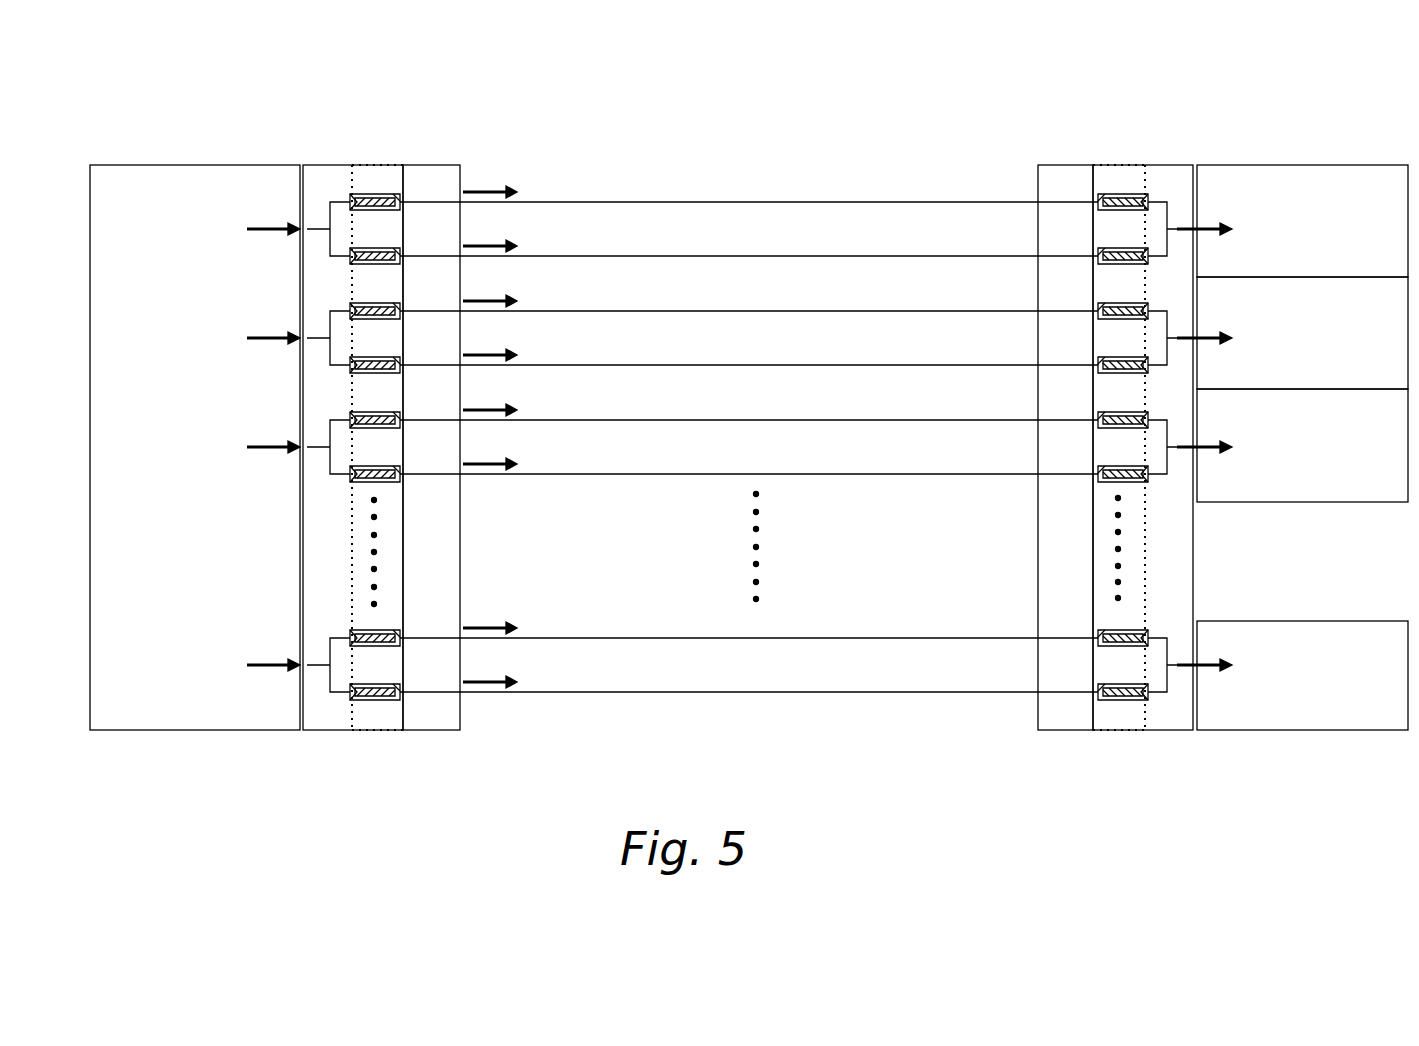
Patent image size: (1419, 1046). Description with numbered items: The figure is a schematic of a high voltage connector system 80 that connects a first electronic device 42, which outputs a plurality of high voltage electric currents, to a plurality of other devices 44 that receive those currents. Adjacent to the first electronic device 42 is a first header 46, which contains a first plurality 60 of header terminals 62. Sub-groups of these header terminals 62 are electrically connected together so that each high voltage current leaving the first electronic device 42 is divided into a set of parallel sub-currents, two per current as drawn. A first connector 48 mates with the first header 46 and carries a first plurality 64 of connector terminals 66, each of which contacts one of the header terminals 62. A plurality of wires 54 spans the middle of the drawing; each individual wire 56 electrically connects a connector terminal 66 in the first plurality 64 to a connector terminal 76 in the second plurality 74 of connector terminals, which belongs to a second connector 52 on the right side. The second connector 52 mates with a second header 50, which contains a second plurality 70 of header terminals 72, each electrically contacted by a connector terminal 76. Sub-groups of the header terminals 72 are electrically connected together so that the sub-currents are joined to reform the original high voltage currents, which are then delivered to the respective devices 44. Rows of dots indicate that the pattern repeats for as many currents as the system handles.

The first electronic device 42 is at (210, 173).
The second electronic device 44 is at (1369, 236).
The first header 46 is at (332, 165).
The first connector 48 is at (438, 170).
The second header 50 is at (1168, 165).
The second connector 52 is at (1078, 165).
The plurality of wires 54 is at (633, 715).
The wire 56 is at (728, 692).
The first plurality of header terminals 60 is at (330, 736).
The header terminal 62 is at (332, 710).
The first plurality of connector terminals 64 is at (383, 718).
The connector terminal 66 is at (400, 206).
The second plurality of header terminals 70 is at (1158, 723).
The header terminal 72 is at (1148, 200).
The second plurality of connector terminals 74 is at (1128, 722).
The connector terminal 76 is at (1068, 718).
The high voltage connector system 80 is at (841, 98).